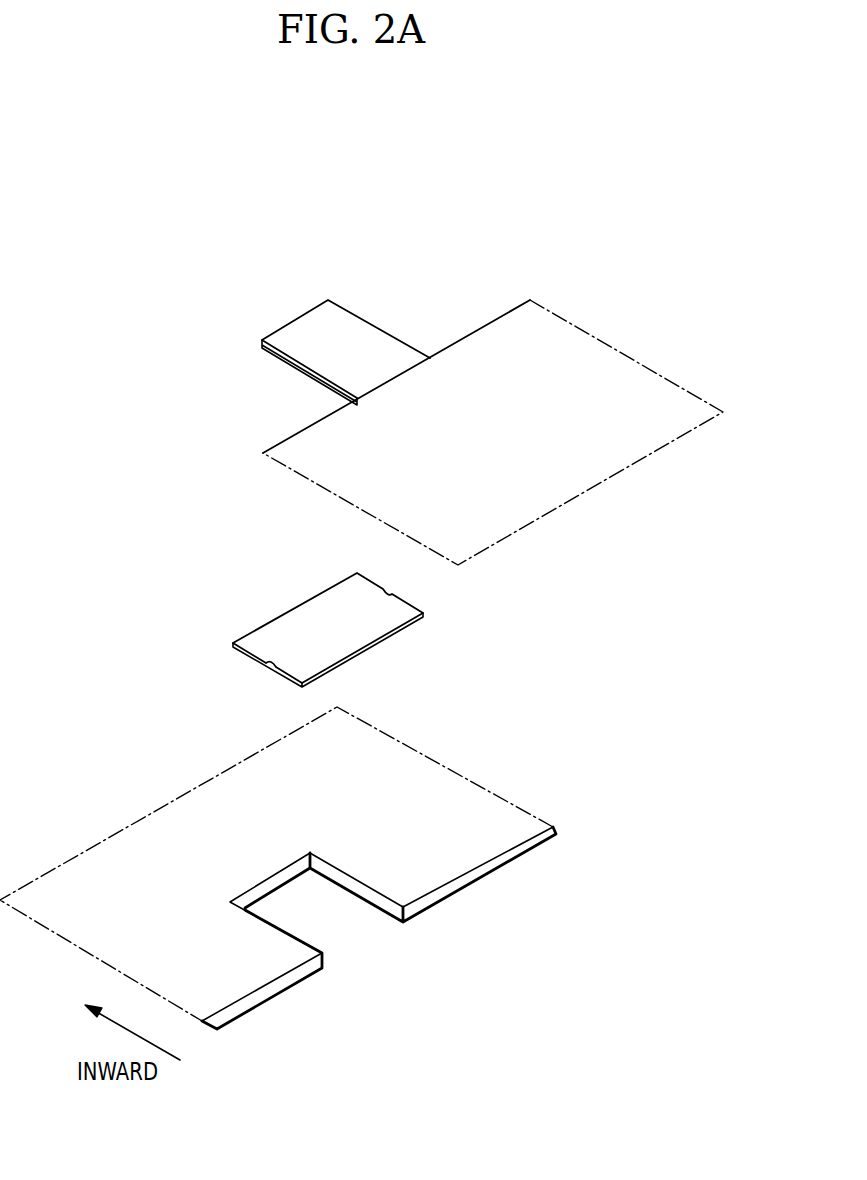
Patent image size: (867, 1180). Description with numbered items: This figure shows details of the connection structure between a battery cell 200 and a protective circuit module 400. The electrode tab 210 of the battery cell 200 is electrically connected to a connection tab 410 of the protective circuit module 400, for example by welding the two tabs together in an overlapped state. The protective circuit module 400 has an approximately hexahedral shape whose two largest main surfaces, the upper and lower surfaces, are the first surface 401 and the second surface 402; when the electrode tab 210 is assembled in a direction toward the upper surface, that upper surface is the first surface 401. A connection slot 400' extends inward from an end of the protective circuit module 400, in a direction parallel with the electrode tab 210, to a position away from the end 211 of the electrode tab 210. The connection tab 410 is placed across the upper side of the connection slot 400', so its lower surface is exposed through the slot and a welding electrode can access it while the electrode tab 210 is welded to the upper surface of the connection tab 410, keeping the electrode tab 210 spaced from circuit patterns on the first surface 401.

The battery cell 200 is at (640, 352).
The electrode tab 210 is at (348, 330).
The end of the electrode tab 211 is at (290, 322).
The connection tab 410 is at (277, 635).
The protective circuit module 400 is at (296, 887).
The first surface 401 is at (233, 988).
The second surface 402 is at (480, 877).
The connection slot 400' is at (343, 929).